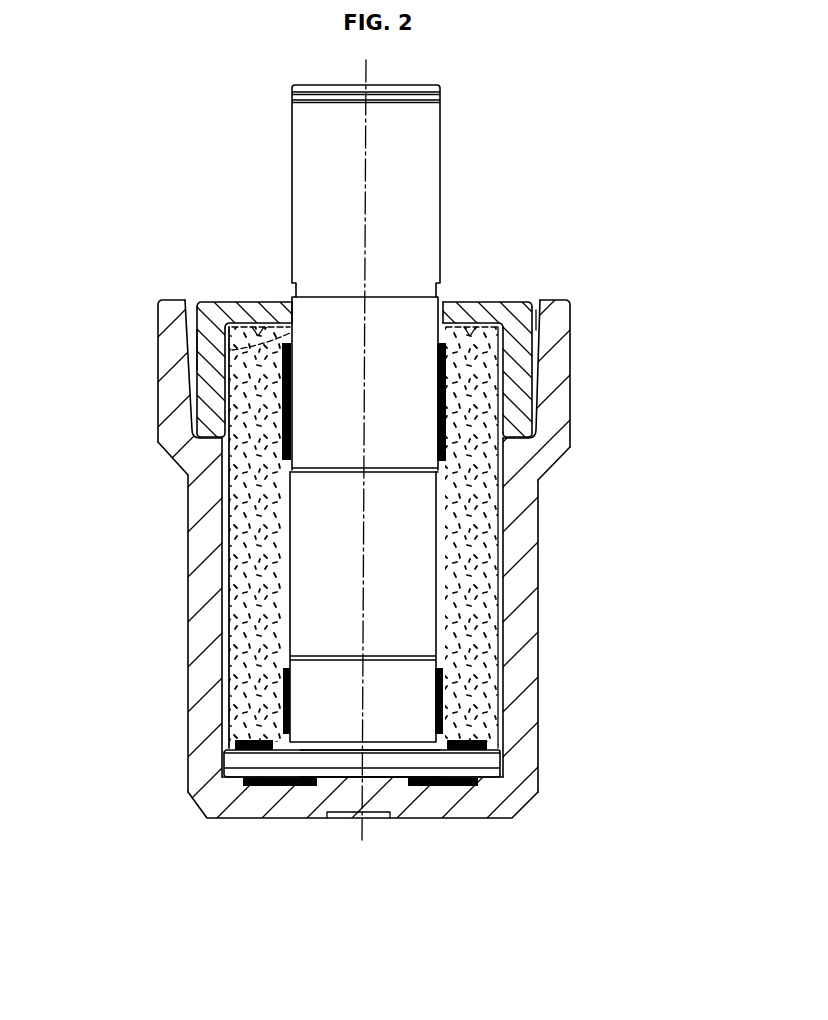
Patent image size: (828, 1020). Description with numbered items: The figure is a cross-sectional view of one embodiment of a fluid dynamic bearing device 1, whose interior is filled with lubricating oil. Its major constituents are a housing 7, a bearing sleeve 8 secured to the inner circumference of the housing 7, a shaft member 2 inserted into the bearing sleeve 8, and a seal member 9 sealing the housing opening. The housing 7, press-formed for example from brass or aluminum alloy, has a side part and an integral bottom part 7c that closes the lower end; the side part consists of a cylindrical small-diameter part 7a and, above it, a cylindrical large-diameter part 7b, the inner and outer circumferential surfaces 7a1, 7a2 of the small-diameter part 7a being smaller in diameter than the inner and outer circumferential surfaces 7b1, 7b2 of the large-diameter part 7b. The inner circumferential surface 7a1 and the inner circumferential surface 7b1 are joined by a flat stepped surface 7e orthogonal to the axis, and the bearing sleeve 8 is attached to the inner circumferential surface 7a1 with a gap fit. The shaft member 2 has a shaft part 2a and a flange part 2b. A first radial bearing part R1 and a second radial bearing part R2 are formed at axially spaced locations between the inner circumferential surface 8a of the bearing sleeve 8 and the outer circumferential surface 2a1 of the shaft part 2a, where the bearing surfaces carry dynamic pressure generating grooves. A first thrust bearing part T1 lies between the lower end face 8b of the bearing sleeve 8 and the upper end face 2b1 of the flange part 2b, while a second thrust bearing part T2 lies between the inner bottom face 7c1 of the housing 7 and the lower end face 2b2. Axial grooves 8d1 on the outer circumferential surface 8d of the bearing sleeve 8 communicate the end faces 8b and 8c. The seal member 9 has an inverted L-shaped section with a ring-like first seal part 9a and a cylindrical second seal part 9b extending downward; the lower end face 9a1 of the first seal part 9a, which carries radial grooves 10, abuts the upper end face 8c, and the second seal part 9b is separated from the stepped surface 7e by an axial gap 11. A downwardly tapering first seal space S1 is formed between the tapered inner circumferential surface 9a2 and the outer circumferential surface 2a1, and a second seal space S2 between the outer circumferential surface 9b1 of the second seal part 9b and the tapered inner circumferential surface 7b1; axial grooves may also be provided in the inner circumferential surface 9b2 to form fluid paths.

The fluid dynamic bearing device 1 is at (583, 274).
The shaft member 2 is at (420, 482).
The shaft part 2a is at (305, 157).
The outer circumferential surface of the shaft part 2a1 is at (437, 660).
The flange part 2b is at (367, 810).
The upper end face of the flange part 2b1 is at (385, 740).
The lower end face of the flange part 2b2 is at (363, 778).
The housing 7 is at (358, 582).
The small-diameter part 7a is at (526, 553).
The inner circumferential surface of the small-diameter part 7a1 is at (238, 513).
The outer circumferential surface of the small-diameter part 7a2 is at (187, 603).
The large-diameter part 7b is at (556, 340).
The inner circumferential surface of the large-diameter part 7b1 is at (190, 324).
The outer circumferential surface of the large-diameter part 7b2 is at (192, 423).
The bottom part 7c is at (278, 806).
The inner bottom face of the housing 7c1 is at (340, 771).
The stepped surface 7e is at (186, 453).
The bearing sleeve 8 is at (354, 562).
The inner circumferential surface of the bearing sleeve 8a is at (300, 562).
The lower end face of the bearing sleeve 8b is at (258, 753).
The upper end face of the bearing sleeve 8c is at (478, 325).
The outer circumferential surface of the bearing sleeve 8d is at (229, 690).
The axial grooves 8d1 is at (230, 656).
The seal member 9 is at (367, 371).
The first seal part 9a is at (254, 313).
The lower end face of the first seal part 9a1 is at (455, 331).
The inner circumferential surface of the first seal part 9a2 is at (292, 300).
The second seal part 9b is at (225, 385).
The outer circumferential surface of the second seal part 9b1 is at (505, 390).
The inner circumferential surface of the second seal part 9b2 is at (485, 451).
The radial grooves 10 is at (200, 345).
The axial gap 11 is at (533, 446).
The first radial bearing part R1 is at (446, 405).
The second radial bearing part R2 is at (444, 698).
The first seal space S1 is at (447, 300).
The second seal space S2 is at (538, 311).
The first thrust bearing part T1 is at (474, 743).
The second thrust bearing part T2 is at (437, 787).